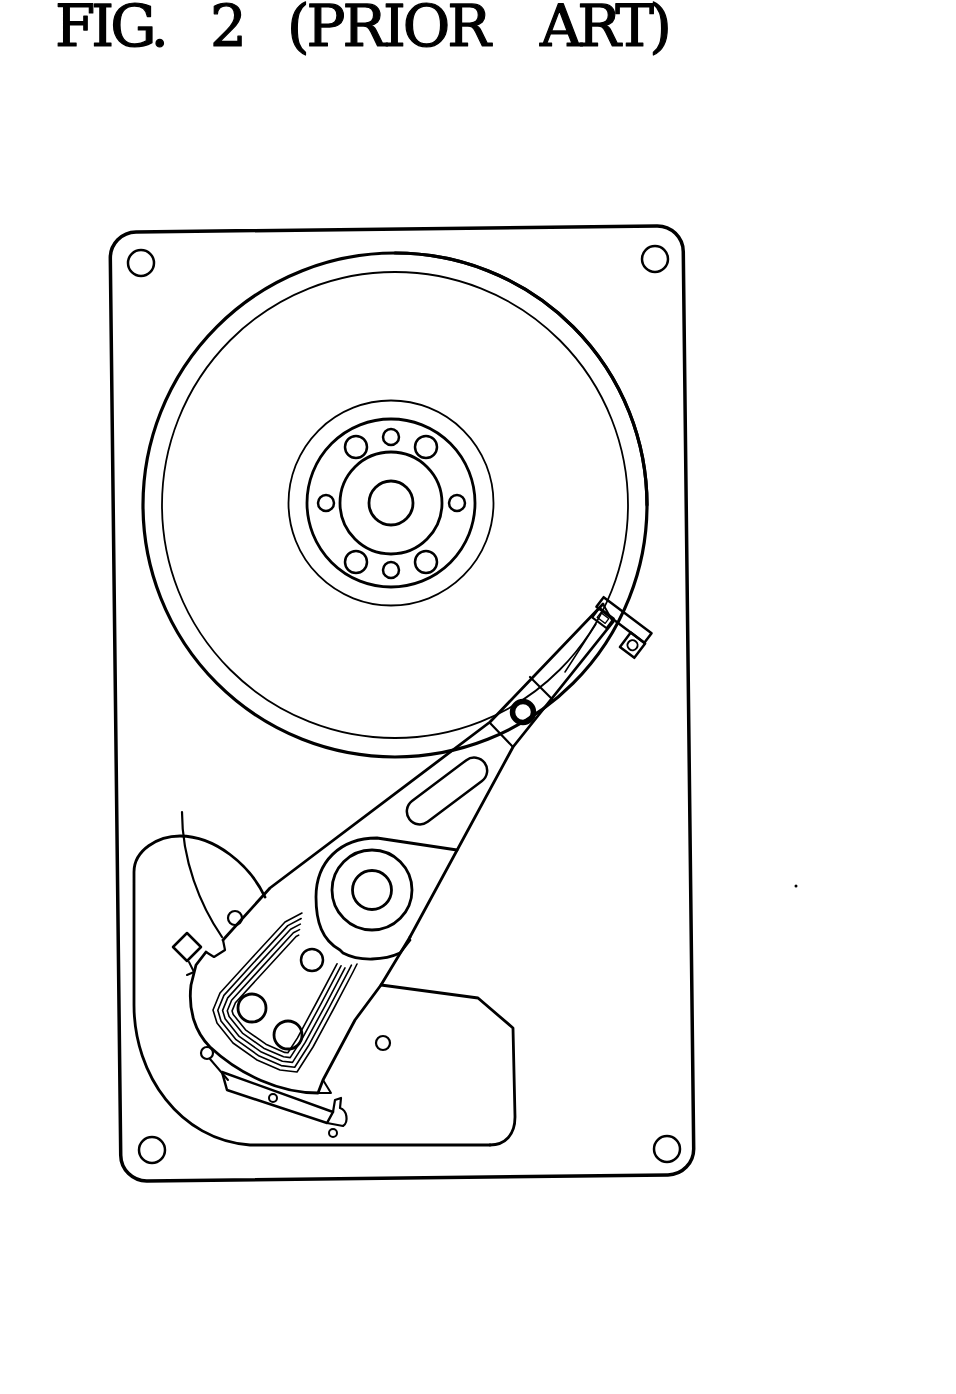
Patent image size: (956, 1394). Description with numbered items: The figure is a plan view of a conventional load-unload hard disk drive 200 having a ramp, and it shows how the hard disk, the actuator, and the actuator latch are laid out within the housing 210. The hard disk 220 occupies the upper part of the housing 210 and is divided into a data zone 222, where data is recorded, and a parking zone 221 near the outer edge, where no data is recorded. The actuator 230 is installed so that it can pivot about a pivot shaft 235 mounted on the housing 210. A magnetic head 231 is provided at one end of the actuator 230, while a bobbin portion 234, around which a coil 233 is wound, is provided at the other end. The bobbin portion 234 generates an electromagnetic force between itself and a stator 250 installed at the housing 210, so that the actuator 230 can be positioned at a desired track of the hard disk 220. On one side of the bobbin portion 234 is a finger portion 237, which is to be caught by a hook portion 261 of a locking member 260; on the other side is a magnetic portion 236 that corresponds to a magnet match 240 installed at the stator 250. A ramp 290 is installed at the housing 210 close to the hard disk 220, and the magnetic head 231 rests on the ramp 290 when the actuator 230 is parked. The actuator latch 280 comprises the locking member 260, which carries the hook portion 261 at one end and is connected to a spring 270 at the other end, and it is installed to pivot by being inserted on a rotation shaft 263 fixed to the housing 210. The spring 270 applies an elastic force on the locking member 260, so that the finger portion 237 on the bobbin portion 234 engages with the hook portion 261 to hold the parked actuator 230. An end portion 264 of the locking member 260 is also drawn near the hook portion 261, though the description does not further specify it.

The hard disk drive 200 is at (680, 194).
The housing 210 is at (663, 363).
The hard disk 220 is at (640, 448).
The parking zone 221 is at (462, 271).
The data zone 222 is at (378, 284).
The actuator 230 is at (497, 767).
The magnetic head 231 is at (618, 617).
The coil 233 is at (283, 933).
The bobbin portion 234 is at (360, 1008).
The pivot shaft 235 is at (378, 897).
The magnetic portion 236 is at (200, 859).
The finger portion 237 is at (331, 1093).
The magnet match 240 is at (173, 948).
The stator 250 is at (147, 884).
The locking member 260 is at (248, 1116).
The hook portion 261 is at (336, 1137).
The rotation shaft 263 is at (274, 1103).
The connector end 264 is at (344, 1128).
The spring 270 is at (215, 1068).
The actuator latch 280 is at (380, 1104).
The ramp 290 is at (650, 645).